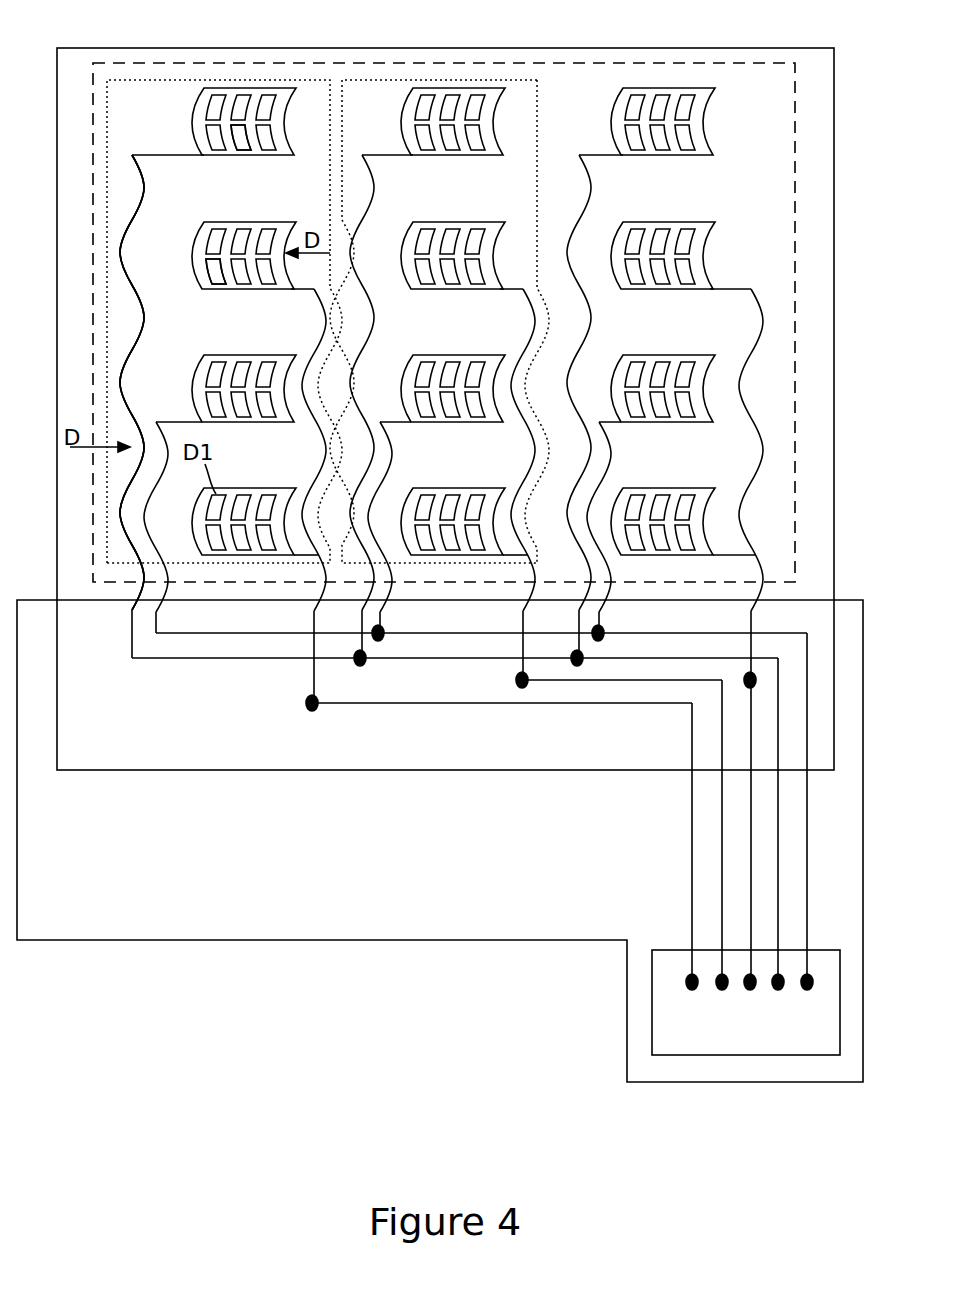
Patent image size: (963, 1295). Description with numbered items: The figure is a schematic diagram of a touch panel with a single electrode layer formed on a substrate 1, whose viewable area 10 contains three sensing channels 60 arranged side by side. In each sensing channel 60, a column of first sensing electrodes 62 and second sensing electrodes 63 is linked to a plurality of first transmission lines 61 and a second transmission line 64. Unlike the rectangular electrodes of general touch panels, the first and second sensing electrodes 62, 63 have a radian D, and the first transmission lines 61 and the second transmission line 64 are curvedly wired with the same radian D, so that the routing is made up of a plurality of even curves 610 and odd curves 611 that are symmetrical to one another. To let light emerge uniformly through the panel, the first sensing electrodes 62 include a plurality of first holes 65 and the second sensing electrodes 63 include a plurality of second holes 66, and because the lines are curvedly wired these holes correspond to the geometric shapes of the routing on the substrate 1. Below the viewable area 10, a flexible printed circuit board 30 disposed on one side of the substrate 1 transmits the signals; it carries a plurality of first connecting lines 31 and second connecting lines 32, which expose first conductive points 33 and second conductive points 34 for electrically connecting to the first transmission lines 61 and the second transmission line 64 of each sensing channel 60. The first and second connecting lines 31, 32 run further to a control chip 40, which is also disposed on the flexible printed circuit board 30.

The substrate 1 is at (150, 47).
The viewable area 10 is at (95, 65).
The sensing channel 60 is at (292, 80).
The first transmission lines 61 is at (145, 183).
The first sensing electrodes 62 is at (197, 94).
The second sensing electrodes 63 is at (276, 222).
The second transmission line 64 is at (324, 314).
The first holes 65 is at (240, 151).
The second holes 66 is at (214, 284).
The even curves 610 is at (133, 225).
The odd curves 611 is at (120, 292).
The flexible printed circuit board 30 is at (278, 940).
The first connecting lines 31 is at (777, 788).
The second connecting lines 32 is at (692, 785).
The first conductive points 33 is at (365, 664).
The second conductive points 34 is at (314, 710).
The control chip 40 is at (652, 975).